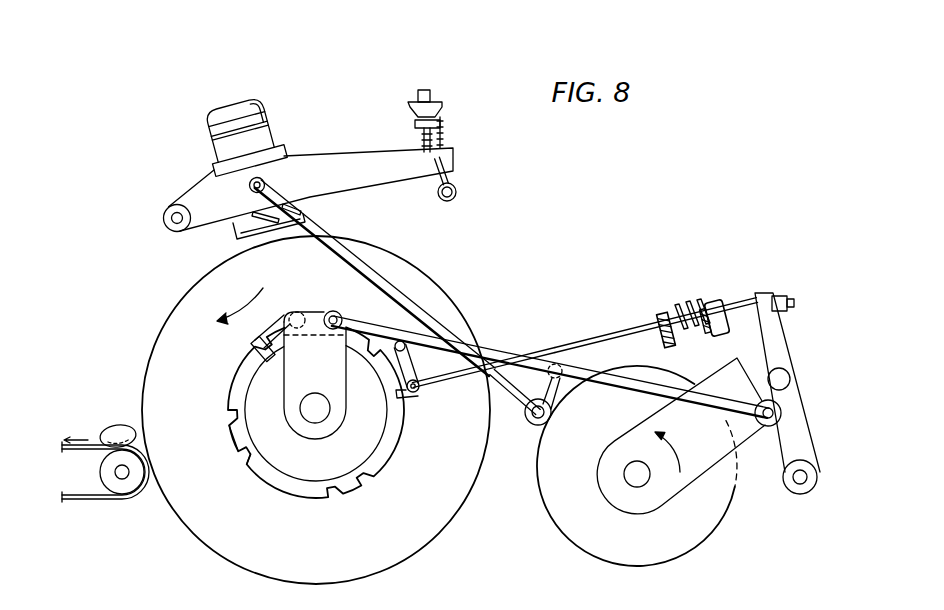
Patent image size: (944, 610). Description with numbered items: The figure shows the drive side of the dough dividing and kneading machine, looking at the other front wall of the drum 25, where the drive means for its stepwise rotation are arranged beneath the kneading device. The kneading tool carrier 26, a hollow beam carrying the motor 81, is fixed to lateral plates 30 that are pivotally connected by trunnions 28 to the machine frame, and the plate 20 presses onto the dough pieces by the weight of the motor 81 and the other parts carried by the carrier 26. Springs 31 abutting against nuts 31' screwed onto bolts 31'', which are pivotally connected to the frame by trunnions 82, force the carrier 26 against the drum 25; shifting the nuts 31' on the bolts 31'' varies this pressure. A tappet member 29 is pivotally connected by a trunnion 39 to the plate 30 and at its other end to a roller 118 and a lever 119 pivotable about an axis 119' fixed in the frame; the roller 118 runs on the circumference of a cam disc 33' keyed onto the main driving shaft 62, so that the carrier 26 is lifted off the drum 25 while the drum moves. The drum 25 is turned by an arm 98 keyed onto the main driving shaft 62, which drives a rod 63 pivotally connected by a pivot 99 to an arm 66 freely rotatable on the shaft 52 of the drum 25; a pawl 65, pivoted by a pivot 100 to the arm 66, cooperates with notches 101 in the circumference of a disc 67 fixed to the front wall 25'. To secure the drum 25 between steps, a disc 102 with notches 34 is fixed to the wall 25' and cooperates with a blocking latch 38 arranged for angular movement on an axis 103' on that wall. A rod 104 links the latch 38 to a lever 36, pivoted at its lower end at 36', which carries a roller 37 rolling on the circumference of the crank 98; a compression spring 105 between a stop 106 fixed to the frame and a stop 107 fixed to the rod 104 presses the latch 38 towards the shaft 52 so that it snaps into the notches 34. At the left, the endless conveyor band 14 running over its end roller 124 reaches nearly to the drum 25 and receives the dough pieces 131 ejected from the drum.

The endless conveyor band 14 is at (90, 498).
The plate 20 is at (238, 236).
The drum 25 is at (294, 410).
The front wall of the drum 25' is at (263, 290).
The kneading tool carrier 26 is at (212, 166).
The trunnions 28 is at (170, 214).
The tappet member 29 is at (343, 252).
The lateral plates 30 is at (334, 170).
The springs 31 is at (387, 119).
The nuts 31' is at (387, 88).
The bolts 31'' is at (380, 64).
The cam disc 33' is at (645, 468).
The notches 34 is at (232, 428).
The lever 36 is at (788, 382).
The pivot 36' is at (800, 494).
The roller 37 is at (790, 380).
The latch 38 is at (415, 400).
The trunnion 39 is at (264, 178).
The shaft of the drum 52 is at (302, 408).
The main driving shaft 62 is at (626, 478).
The rod 63 is at (505, 358).
The pawl 65 is at (262, 345).
The arm 66 is at (293, 382).
The disc 67 is at (262, 418).
The motor 81 is at (217, 115).
The trunnions 82 is at (441, 199).
The arm 98 is at (702, 462).
The pivot 99 is at (342, 315).
The pivot 100 is at (300, 313).
The notches 101 is at (258, 457).
The disc 102 is at (240, 452).
The rod 103' is at (483, 378).
The rod 104 is at (600, 343).
The compression spring 105 is at (682, 311).
The stop 106 is at (709, 301).
The stop 107 is at (660, 321).
The roller 118 is at (536, 426).
The lever 119 is at (523, 406).
The axis 119' is at (553, 346).
The end roller 124 is at (127, 483).
The dough pieces 131 is at (112, 427).